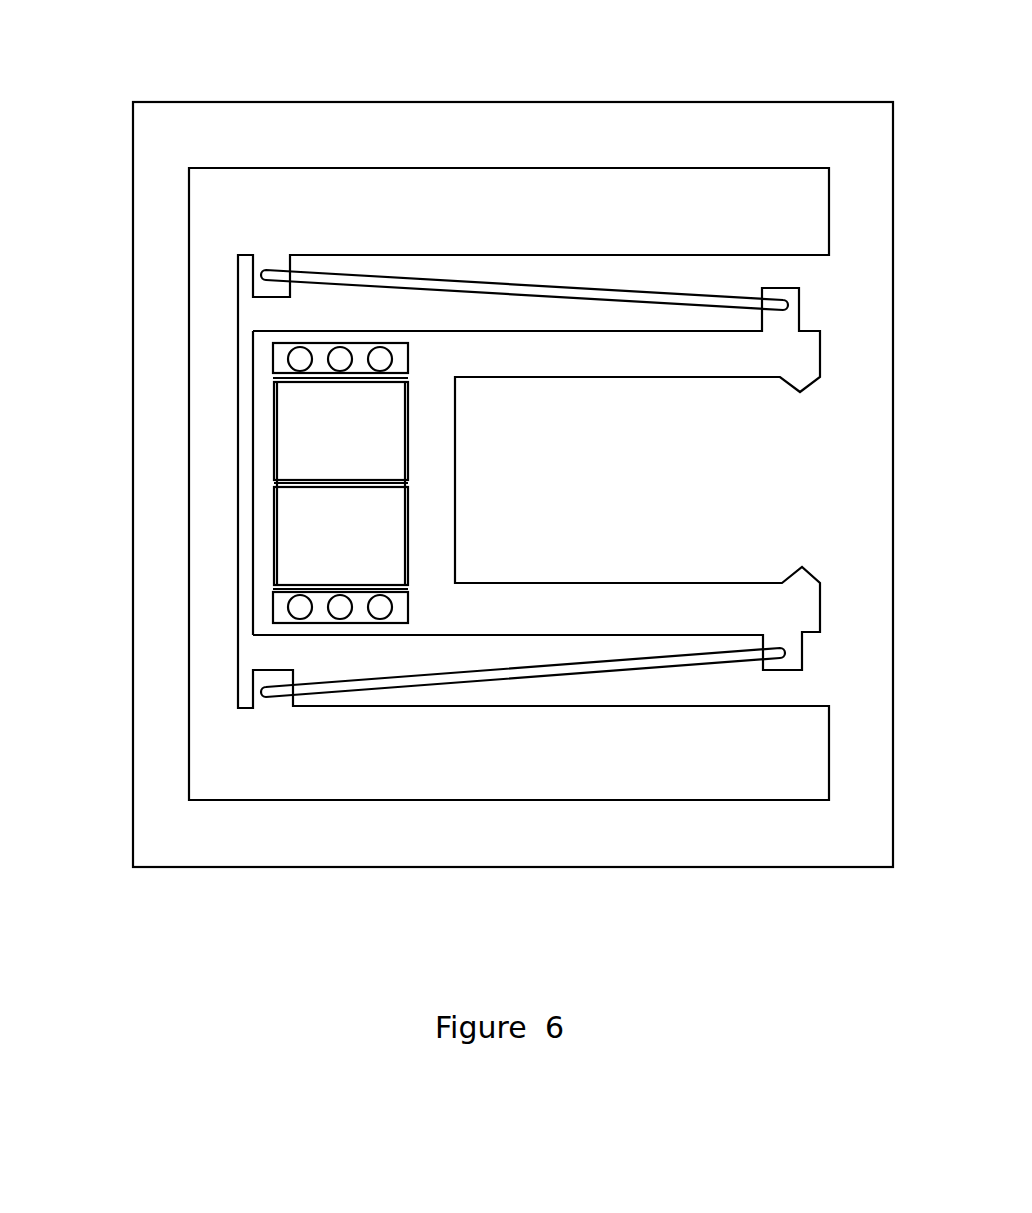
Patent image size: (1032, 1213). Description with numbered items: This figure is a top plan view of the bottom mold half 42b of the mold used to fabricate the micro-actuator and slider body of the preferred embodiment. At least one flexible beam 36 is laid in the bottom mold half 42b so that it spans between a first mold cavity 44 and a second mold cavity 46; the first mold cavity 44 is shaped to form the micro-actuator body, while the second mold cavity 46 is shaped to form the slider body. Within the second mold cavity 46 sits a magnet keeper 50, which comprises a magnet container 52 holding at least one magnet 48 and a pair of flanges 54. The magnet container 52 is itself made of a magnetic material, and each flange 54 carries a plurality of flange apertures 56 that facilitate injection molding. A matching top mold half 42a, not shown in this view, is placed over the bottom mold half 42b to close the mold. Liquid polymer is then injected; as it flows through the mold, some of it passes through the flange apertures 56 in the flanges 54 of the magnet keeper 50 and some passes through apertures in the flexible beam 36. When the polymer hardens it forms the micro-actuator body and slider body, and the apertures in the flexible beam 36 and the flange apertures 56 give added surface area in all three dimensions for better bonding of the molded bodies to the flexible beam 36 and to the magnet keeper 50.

The flexible beam 36 is at (408, 283).
The top mold half 42a is at (483, 487).
The bottom mold half 42b is at (568, 140).
The first mold cavity 44 is at (690, 828).
The second mold cavity 46 is at (798, 607).
The magnet 48 is at (300, 527).
The magnet keeper 50 is at (250, 608).
The magnet container 52 is at (273, 558).
The flange 54 is at (283, 363).
The flange aperture 56 is at (338, 358).